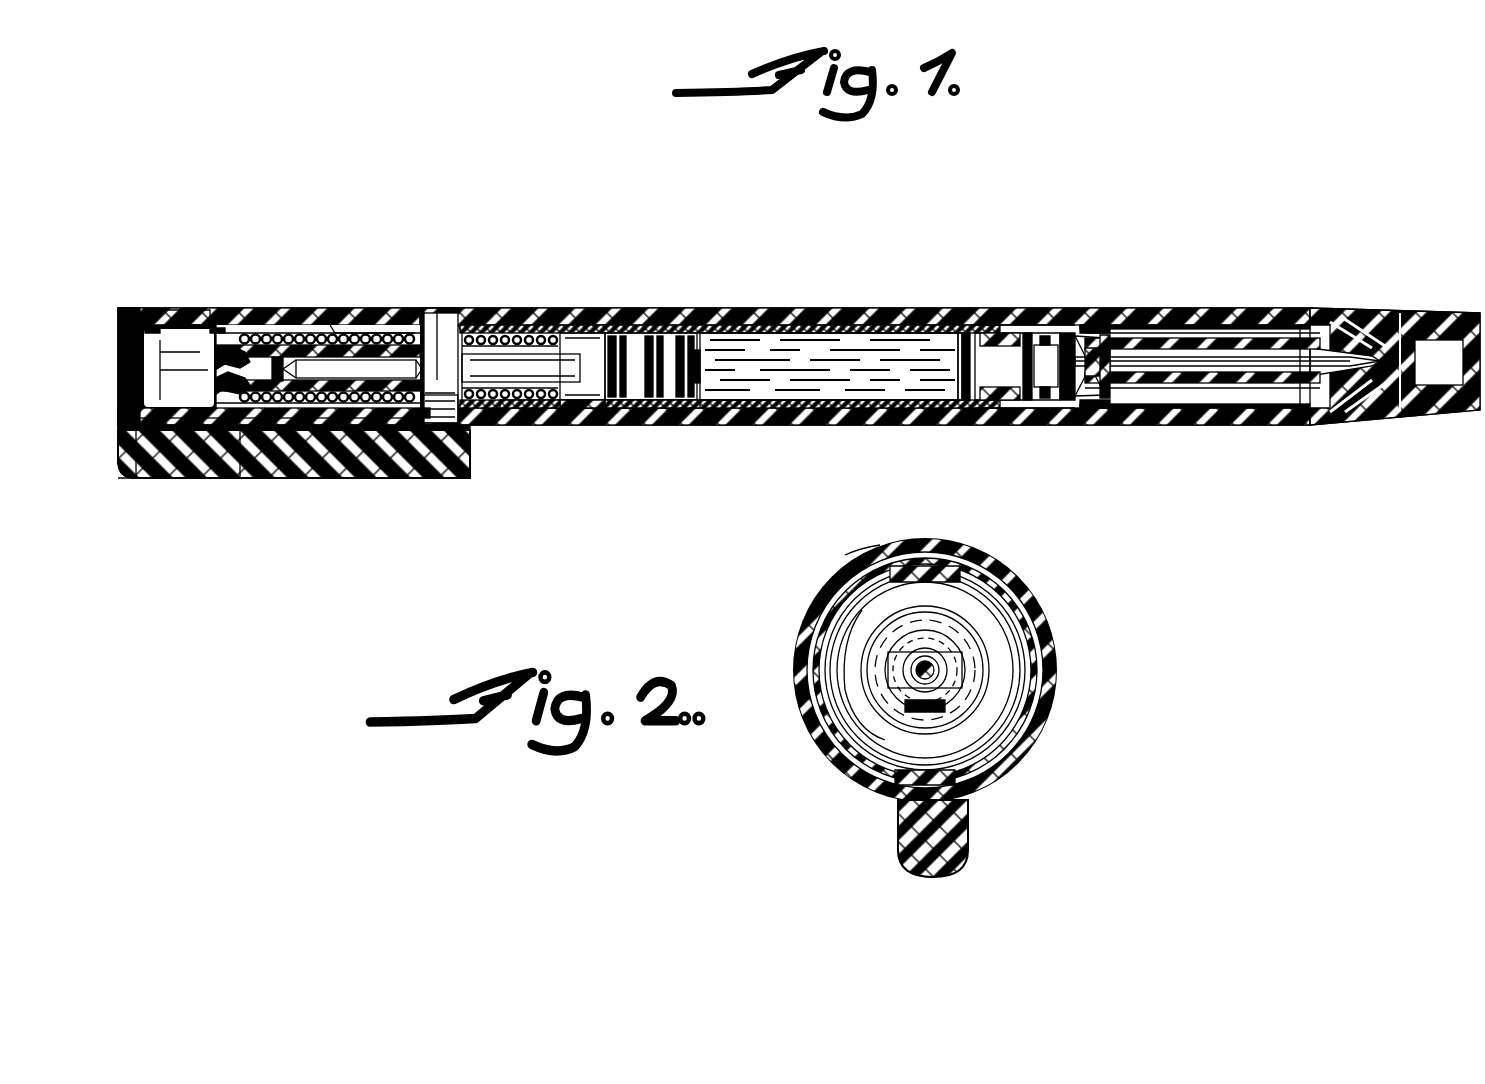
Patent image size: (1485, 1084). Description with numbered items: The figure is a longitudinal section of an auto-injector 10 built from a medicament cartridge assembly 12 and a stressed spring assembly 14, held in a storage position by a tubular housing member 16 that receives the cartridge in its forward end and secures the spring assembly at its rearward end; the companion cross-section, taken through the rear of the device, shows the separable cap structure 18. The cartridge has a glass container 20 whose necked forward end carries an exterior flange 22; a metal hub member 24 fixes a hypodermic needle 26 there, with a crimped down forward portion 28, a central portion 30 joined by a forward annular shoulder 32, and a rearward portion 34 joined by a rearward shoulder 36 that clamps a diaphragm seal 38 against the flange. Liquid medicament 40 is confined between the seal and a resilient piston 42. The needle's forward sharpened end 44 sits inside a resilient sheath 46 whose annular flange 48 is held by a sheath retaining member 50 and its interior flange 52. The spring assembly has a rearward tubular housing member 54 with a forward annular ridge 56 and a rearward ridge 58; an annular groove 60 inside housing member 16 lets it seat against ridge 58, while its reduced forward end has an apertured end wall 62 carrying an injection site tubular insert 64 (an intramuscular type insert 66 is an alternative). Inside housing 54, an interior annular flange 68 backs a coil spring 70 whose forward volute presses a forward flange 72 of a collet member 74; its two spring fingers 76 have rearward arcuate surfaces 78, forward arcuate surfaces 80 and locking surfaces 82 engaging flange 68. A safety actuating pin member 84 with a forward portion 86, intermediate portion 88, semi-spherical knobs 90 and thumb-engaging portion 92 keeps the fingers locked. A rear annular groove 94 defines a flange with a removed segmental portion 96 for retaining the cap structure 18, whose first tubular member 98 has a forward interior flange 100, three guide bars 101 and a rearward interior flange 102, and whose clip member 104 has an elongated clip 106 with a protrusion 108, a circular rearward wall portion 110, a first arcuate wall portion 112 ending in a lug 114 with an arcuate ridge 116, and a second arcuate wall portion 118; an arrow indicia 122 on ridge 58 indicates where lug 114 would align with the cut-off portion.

In FIG. 1, the auto-injector 10 is at (842, 305).
In FIG. 2, the auto-injector 10 is at (1042, 590).
In FIG. 1, the medicament cartridge assembly 12 is at (903, 312).
In FIG. 1, the stressed spring assembly 14 is at (455, 318).
In FIG. 2, the stressed spring assembly 14 is at (815, 580).
In FIG. 1, the tubular housing member 16 is at (1018, 410).
In FIG. 1, the cap structure 18 is at (335, 326).
In FIG. 2, the cap structure 18 is at (1062, 692).
In FIG. 1, the container 20 is at (852, 420).
In FIG. 1, the exterior flange 22 is at (958, 370).
In FIG. 1, the hub member 24 is at (1170, 318).
In FIG. 1, the hypodermic needle 26 is at (1215, 372).
In FIG. 1, the crimped down forward portion 28 is at (1112, 405).
In FIG. 1, the central portion 30 is at (1050, 410).
In FIG. 1, the forward annular shoulder 32 is at (1095, 412).
In FIG. 1, the rearward portion 34 is at (962, 412).
In FIG. 1, the rearward shoulder 36 is at (1002, 328).
In FIG. 1, the diaphragm seal 38 is at (1068, 360).
In FIG. 1, the liquid medicament 40 is at (722, 332).
In FIG. 1, the plunger or piston 42 is at (640, 330).
In FIG. 1, the forward sharpened end 44 is at (1328, 425).
In FIG. 1, the resilient sheath 46 is at (1360, 312).
In FIG. 1, the annular flange 48 is at (1098, 325).
In FIG. 1, the annular sheath retaining member 50 is at (1068, 328).
In FIG. 1, the interior flange 52 is at (1108, 335).
In FIG. 1, the rearward tubular housing member 54 is at (568, 330).
In FIG. 2, the rearward tubular housing member 54 is at (867, 672).
In FIG. 1, the forward annular ridge 56 is at (500, 408).
In FIG. 1, the rearward ridge 58 is at (520, 405).
In FIG. 1, the annular groove 60 is at (560, 410).
In FIG. 1, the apertured end wall 62 is at (1428, 315).
In FIG. 1, the injection site tubular insert 64 is at (1412, 415).
In FIG. 1, the intramuscular type insert 66 is at (272, 369).
In FIG. 1, the interior annular flange 68 is at (215, 396).
In FIG. 1, the coil spring 70 is at (395, 328).
In FIG. 1, the forward flange 72 is at (690, 412).
In FIG. 1, the collet member 74 is at (612, 414).
In FIG. 2, the collet member 74 is at (900, 765).
In FIG. 1, the spring fingers 76 is at (370, 425).
In FIG. 2, the spring fingers 76 is at (992, 566).
In FIG. 1, the rearward arcuate surfaces 78 is at (210, 353).
In FIG. 2, the rearward arcuate surfaces 78 is at (962, 668).
In FIG. 1, the forward arcuate surfaces 80 is at (322, 432).
In FIG. 1, the locking surfaces 82 is at (292, 340).
In FIG. 1, the safety actuating pin member 84 is at (128, 322).
In FIG. 2, the safety actuating pin member 84 is at (892, 708).
In FIG. 2, the forward portion 86 is at (1000, 630).
In FIG. 1, the intermediate portion 88 is at (128, 362).
In FIG. 2, the intermediate portion 88 is at (880, 690).
In FIG. 1, the semi-spherical knobs 90 is at (120, 425).
In FIG. 2, the semi-spherical knobs 90 is at (1010, 645).
In FIG. 1, the thumb-engaging portion 92 is at (130, 480).
In FIG. 1, the annular groove 94 is at (232, 468).
In FIG. 2, the removed segmental portion 96 is at (855, 655).
In FIG. 1, the first tubular member 98 is at (347, 326).
In FIG. 1, the forward interior flange 100 is at (440, 335).
In FIG. 2, the forward interior flange 100 is at (828, 612).
In FIG. 2, the guide bars 101 is at (848, 552).
In FIG. 1, the rearward interior flange 102 is at (190, 322).
In FIG. 1, the clip member 104 is at (298, 482).
In FIG. 2, the clip member 104 is at (978, 843).
In FIG. 1, the elongated clip 106 is at (465, 480).
In FIG. 2, the elongated clip 106 is at (896, 843).
In FIG. 1, the protrusion 108 is at (455, 425).
In FIG. 1, the circular rearward wall portion 110 is at (162, 318).
In FIG. 2, the first arcuate wall portion 112 is at (950, 565).
In FIG. 1, the lug 114 is at (228, 322).
In FIG. 2, the lug 114 is at (910, 545).
In FIG. 1, the arcuate ridge 116 is at (170, 320).
In FIG. 2, the second arcuate wall portion 118 is at (915, 680).
In FIG. 1, the arrow indicia 122 is at (470, 325).